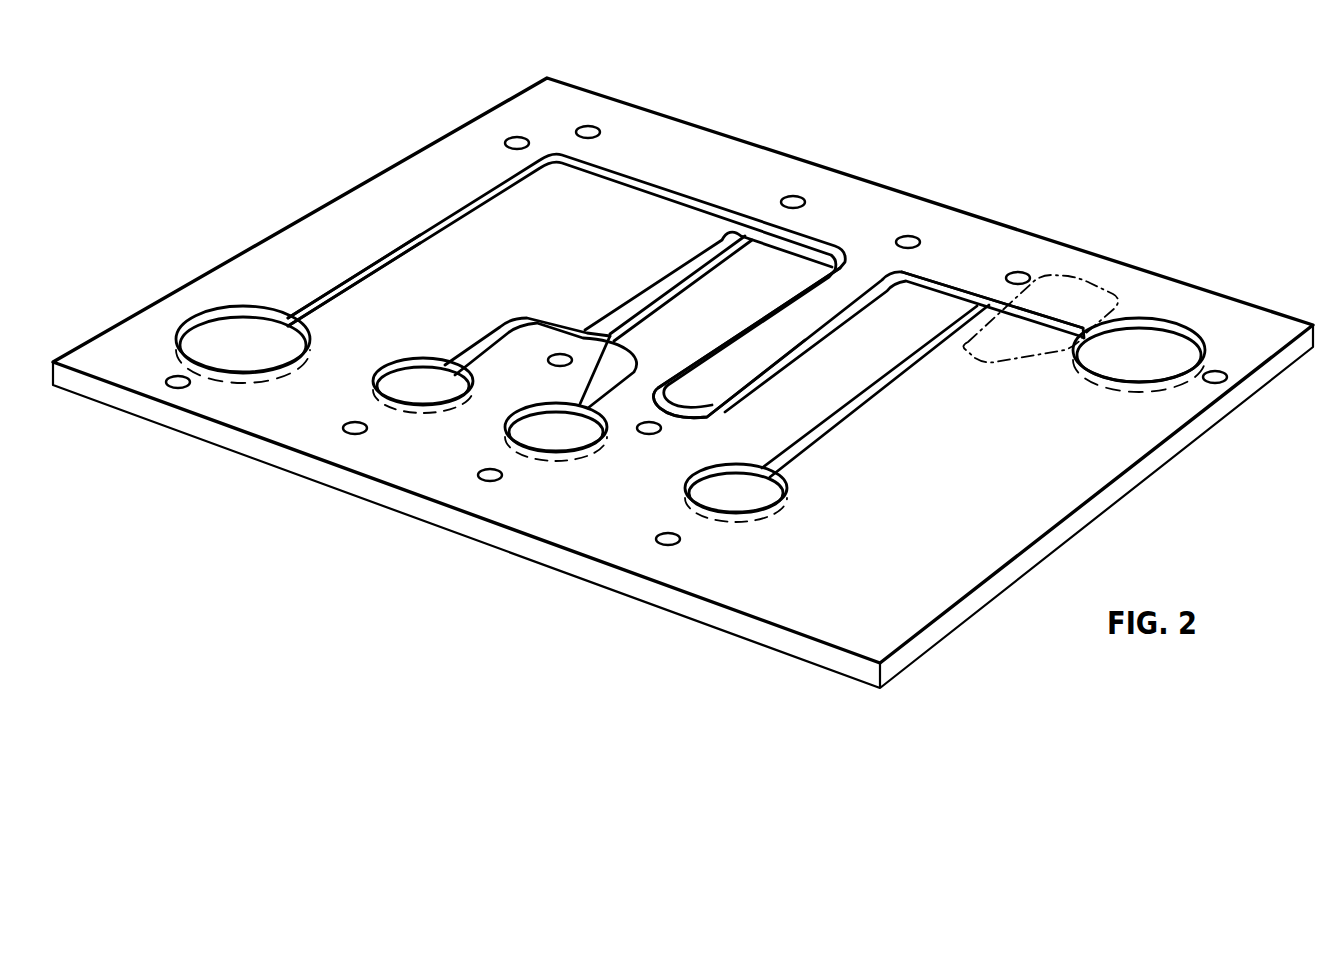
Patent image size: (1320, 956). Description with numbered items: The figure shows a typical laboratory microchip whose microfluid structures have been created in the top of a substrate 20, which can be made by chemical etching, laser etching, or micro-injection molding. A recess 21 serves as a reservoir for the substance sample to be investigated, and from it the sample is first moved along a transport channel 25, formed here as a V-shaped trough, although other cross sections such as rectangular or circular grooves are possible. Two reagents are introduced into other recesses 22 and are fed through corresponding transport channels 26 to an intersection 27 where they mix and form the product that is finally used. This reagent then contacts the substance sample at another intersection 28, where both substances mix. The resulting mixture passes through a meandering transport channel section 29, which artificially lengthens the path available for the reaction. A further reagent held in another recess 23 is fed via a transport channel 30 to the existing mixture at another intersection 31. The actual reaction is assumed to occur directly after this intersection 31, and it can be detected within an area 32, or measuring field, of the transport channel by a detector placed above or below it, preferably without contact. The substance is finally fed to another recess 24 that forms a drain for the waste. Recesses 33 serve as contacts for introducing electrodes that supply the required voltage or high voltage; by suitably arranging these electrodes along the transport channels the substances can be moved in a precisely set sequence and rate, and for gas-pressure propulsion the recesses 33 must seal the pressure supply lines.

The substrate 20 is at (538, 548).
The recess 21 is at (220, 332).
The recesses 22 is at (416, 384).
The recess 23 is at (762, 489).
The recess 24 is at (1122, 378).
The transport channel 25 is at (394, 250).
The transport channels 26 is at (484, 335).
The intersection 27 is at (586, 316).
The intersection 28 is at (757, 207).
The meandering transport channel section 29 is at (795, 355).
The transport channel 30 is at (880, 385).
The intersection 31 is at (984, 287).
The area 32 is at (1086, 290).
The recesses 33 is at (508, 136).